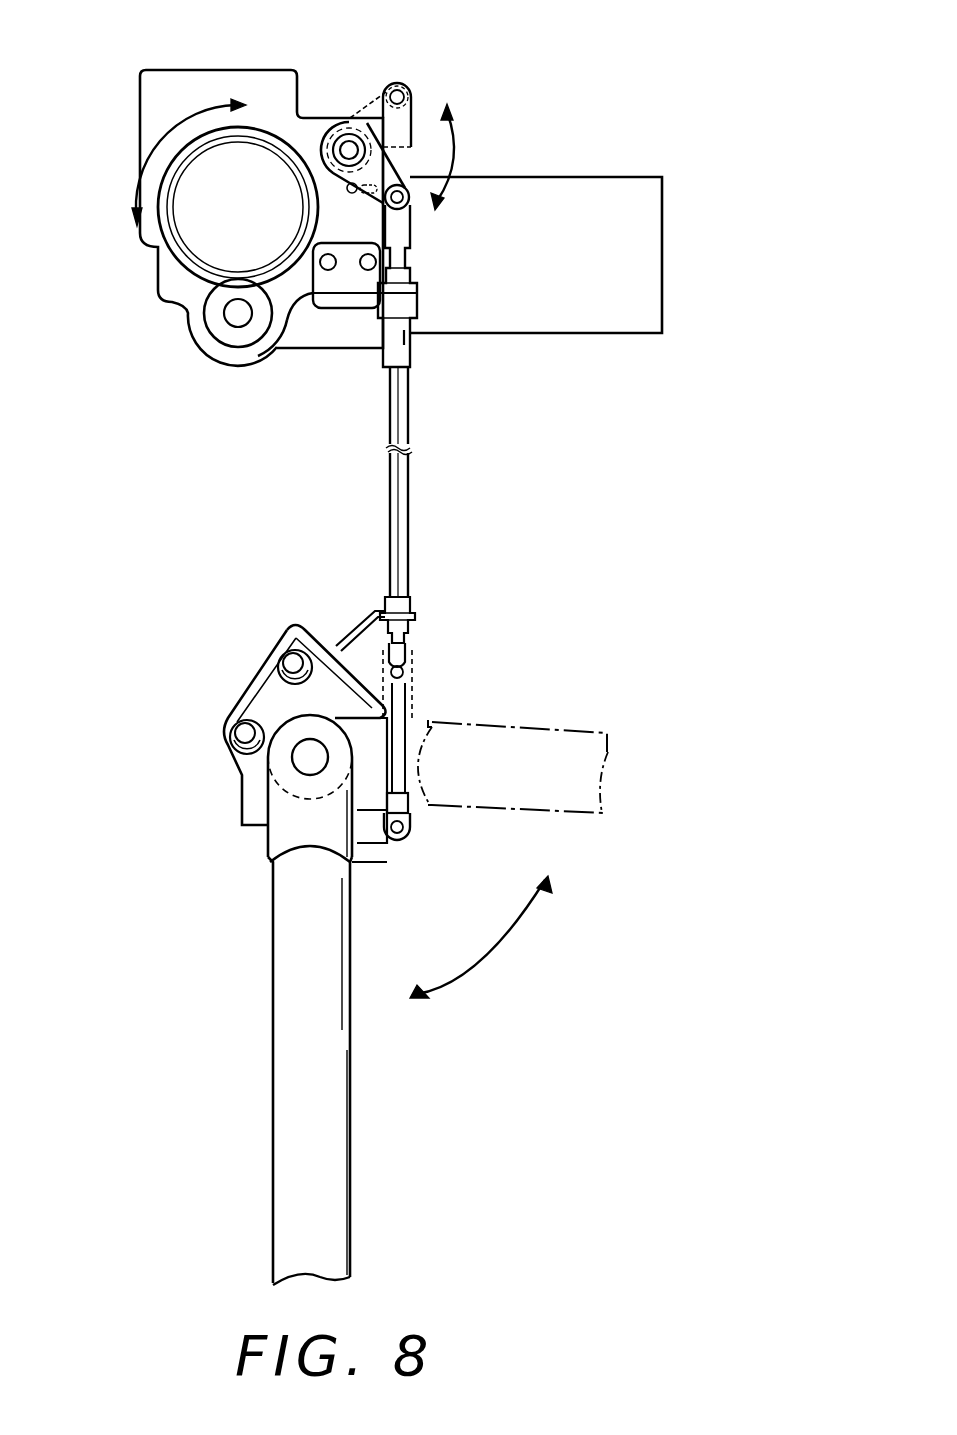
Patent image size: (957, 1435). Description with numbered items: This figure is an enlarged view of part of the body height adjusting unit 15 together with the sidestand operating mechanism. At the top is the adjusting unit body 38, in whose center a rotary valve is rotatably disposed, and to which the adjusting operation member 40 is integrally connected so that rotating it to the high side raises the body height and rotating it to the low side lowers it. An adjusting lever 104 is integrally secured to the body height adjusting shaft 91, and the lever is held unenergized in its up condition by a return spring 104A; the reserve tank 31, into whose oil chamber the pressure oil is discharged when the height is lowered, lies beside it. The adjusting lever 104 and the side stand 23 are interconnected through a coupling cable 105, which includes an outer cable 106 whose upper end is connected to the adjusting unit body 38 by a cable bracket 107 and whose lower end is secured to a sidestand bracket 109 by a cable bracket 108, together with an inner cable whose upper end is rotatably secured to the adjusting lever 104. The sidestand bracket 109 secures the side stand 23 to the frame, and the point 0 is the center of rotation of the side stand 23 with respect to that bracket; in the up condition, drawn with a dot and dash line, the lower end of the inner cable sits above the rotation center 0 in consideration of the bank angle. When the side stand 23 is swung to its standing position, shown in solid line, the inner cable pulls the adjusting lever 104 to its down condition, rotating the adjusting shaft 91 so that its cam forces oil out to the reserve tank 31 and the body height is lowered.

The body height adjusting unit 15 is at (148, 62).
The adjusting unit body 38 is at (150, 108).
The adjusting operation member 40 is at (193, 233).
The body height adjusting shaft 91 is at (350, 150).
The adjusting lever 104 is at (400, 165).
The return spring 104A is at (330, 117).
The reserve tank 31 is at (572, 176).
The cable bracket 107 is at (347, 300).
The outer cable 106 is at (410, 398).
The coupling cable 105 is at (408, 500).
The cable bracket 108 is at (350, 640).
The sidestand bracket 109 is at (265, 702).
The rotation center 0 is at (308, 761).
The side stand 23 is at (533, 808).